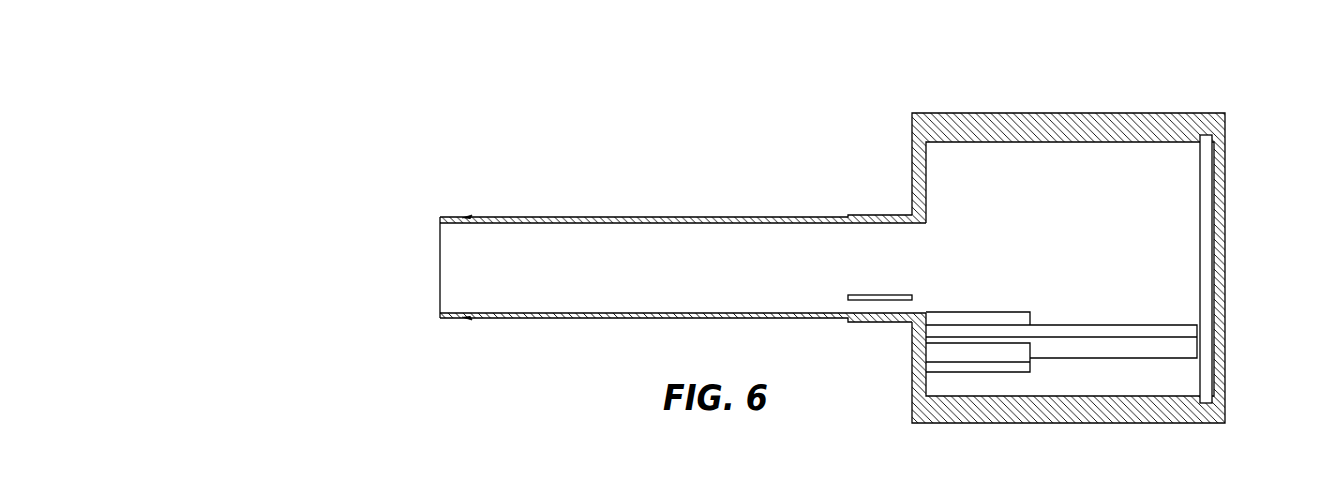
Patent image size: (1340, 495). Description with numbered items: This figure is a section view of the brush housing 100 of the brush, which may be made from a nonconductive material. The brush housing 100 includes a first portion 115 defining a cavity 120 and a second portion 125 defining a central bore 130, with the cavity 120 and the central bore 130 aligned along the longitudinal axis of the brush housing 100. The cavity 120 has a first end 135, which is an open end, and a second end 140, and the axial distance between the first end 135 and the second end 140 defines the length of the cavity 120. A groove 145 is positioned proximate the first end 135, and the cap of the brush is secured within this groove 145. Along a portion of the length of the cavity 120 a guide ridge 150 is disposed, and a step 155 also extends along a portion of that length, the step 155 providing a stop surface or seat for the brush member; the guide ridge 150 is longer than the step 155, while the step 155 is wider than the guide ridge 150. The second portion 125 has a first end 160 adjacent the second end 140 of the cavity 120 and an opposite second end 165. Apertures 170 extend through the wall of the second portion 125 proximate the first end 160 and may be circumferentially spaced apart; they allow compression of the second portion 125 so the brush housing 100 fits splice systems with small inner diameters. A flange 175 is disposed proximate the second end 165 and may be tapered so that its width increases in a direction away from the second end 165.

The brush housing 100 is at (798, 125).
The first portion 115 is at (1008, 130).
The cavity 120 is at (1076, 223).
The second portion 125 is at (667, 217).
The central bore 130 is at (554, 268).
The first end 135 is at (1226, 395).
The second end 140 is at (915, 398).
The groove 145 is at (1207, 157).
The guide ridge 150 is at (1128, 345).
The step 155 is at (997, 350).
The first end 160 is at (911, 212).
The second end 165 is at (445, 318).
The apertures 170 is at (883, 300).
The flange 175 is at (468, 215).